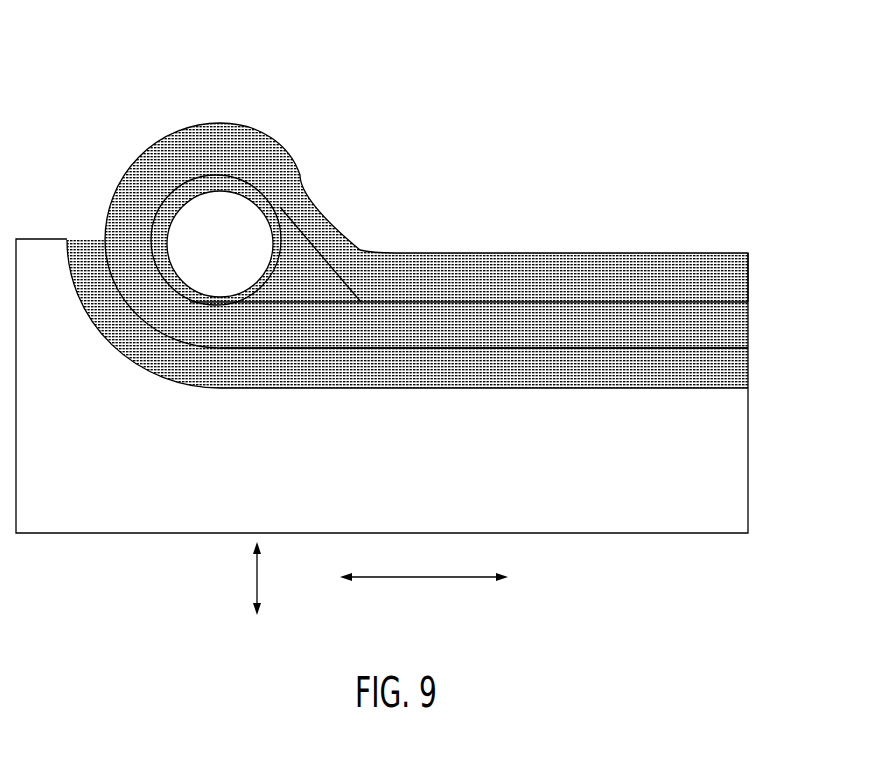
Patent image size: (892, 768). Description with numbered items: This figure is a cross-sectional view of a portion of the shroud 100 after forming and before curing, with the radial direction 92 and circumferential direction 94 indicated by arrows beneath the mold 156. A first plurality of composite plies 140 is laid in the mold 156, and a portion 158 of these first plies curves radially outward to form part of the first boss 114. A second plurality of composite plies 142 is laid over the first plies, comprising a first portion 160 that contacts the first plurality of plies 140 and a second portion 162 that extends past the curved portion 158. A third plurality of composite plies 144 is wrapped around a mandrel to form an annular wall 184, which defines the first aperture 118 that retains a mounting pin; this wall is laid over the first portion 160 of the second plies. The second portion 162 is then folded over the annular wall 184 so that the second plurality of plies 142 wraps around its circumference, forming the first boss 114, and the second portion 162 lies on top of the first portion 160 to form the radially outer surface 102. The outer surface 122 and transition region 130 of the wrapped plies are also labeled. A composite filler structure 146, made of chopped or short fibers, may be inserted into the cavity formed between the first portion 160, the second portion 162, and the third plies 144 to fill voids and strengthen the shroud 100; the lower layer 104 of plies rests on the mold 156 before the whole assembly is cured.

The shroud 100 is at (136, 95).
The first boss 114 is at (265, 97).
The first aperture 118 is at (197, 224).
The outer surface of roll 122 is at (296, 152).
The third plurality of composite plies 144 is at (150, 223).
The annular wall 184 is at (277, 203).
The transition segment 130 is at (357, 240).
The radially outer surface 102 is at (623, 253).
The second plurality of composite plies 142 is at (482, 268).
The second portion of the second plurality of composite plies 162 is at (700, 267).
The first portion of the second plurality of composite plies 160 is at (610, 330).
The lower layer 104 is at (492, 388).
The first plurality of composite plies 140 is at (418, 388).
The portion of the first plurality of plies 158 is at (128, 333).
The composite filler structure 146 is at (294, 294).
The mold 156 is at (645, 508).
The radial direction 92 is at (255, 579).
The circumferential direction 94 is at (416, 580).